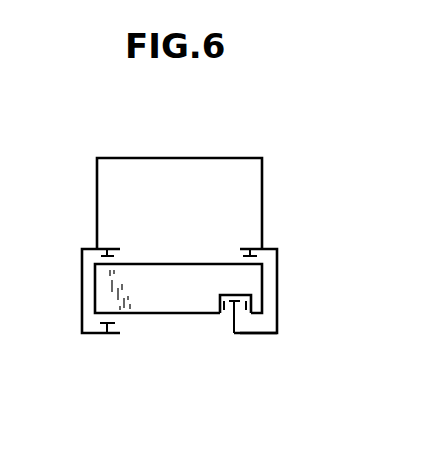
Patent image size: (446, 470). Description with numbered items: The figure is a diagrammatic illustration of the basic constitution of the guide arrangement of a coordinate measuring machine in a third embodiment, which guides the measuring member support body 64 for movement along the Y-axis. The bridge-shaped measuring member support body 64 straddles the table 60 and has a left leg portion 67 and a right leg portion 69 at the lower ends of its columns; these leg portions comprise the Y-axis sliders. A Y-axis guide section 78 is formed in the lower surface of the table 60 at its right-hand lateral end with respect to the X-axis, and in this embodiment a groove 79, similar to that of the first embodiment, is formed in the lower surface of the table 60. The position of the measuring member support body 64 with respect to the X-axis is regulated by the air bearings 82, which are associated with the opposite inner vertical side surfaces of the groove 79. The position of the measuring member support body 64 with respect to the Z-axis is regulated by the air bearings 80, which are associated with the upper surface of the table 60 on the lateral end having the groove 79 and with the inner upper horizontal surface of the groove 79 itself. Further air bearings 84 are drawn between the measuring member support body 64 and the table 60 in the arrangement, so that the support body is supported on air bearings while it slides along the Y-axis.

The measuring member support body 64 is at (180, 158).
The table 60 is at (165, 264).
The left leg portion 67 is at (82, 290).
The right leg portion 69 is at (277, 292).
The air bearing 84 is at (110, 249).
The air bearings 80 is at (248, 249).
The air bearings 82 is at (222, 305).
The groove 79 is at (232, 313).
The Y-axis guide section 78 is at (242, 337).